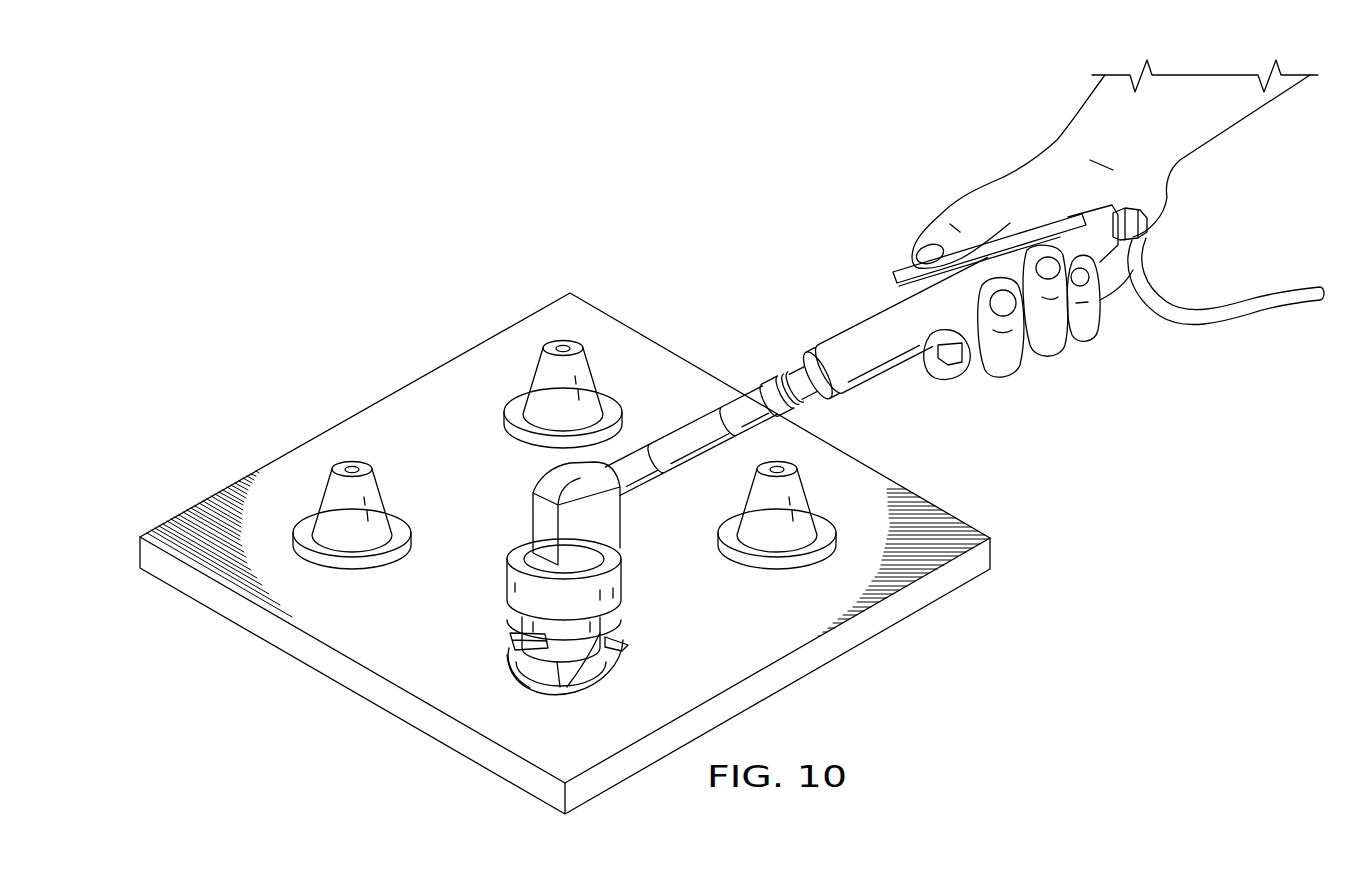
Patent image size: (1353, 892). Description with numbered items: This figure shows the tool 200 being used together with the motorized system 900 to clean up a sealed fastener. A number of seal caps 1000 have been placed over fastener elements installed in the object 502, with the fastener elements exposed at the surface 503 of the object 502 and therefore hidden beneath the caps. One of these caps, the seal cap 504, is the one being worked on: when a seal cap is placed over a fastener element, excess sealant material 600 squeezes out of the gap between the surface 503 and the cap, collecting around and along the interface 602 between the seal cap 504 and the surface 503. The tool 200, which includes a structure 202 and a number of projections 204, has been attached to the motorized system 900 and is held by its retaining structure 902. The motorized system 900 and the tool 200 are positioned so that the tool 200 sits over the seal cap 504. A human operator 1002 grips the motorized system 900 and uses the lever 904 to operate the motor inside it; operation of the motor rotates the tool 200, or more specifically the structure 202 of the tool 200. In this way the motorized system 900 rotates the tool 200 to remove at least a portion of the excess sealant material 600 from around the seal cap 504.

The tool 200 is at (645, 616).
The structure 202 is at (523, 627).
The number of projections 204 is at (483, 646).
The object 502 is at (352, 416).
The surface 503 is at (468, 435).
The seal cap 504 is at (530, 653).
The excess sealant material 600 is at (617, 667).
The interface 602 is at (642, 660).
The motorized system 900 is at (762, 350).
The retaining structure 902 is at (523, 545).
The lever 904 is at (1017, 223).
The number of seal caps 1000 is at (825, 480).
The human operator 1002 is at (1037, 357).